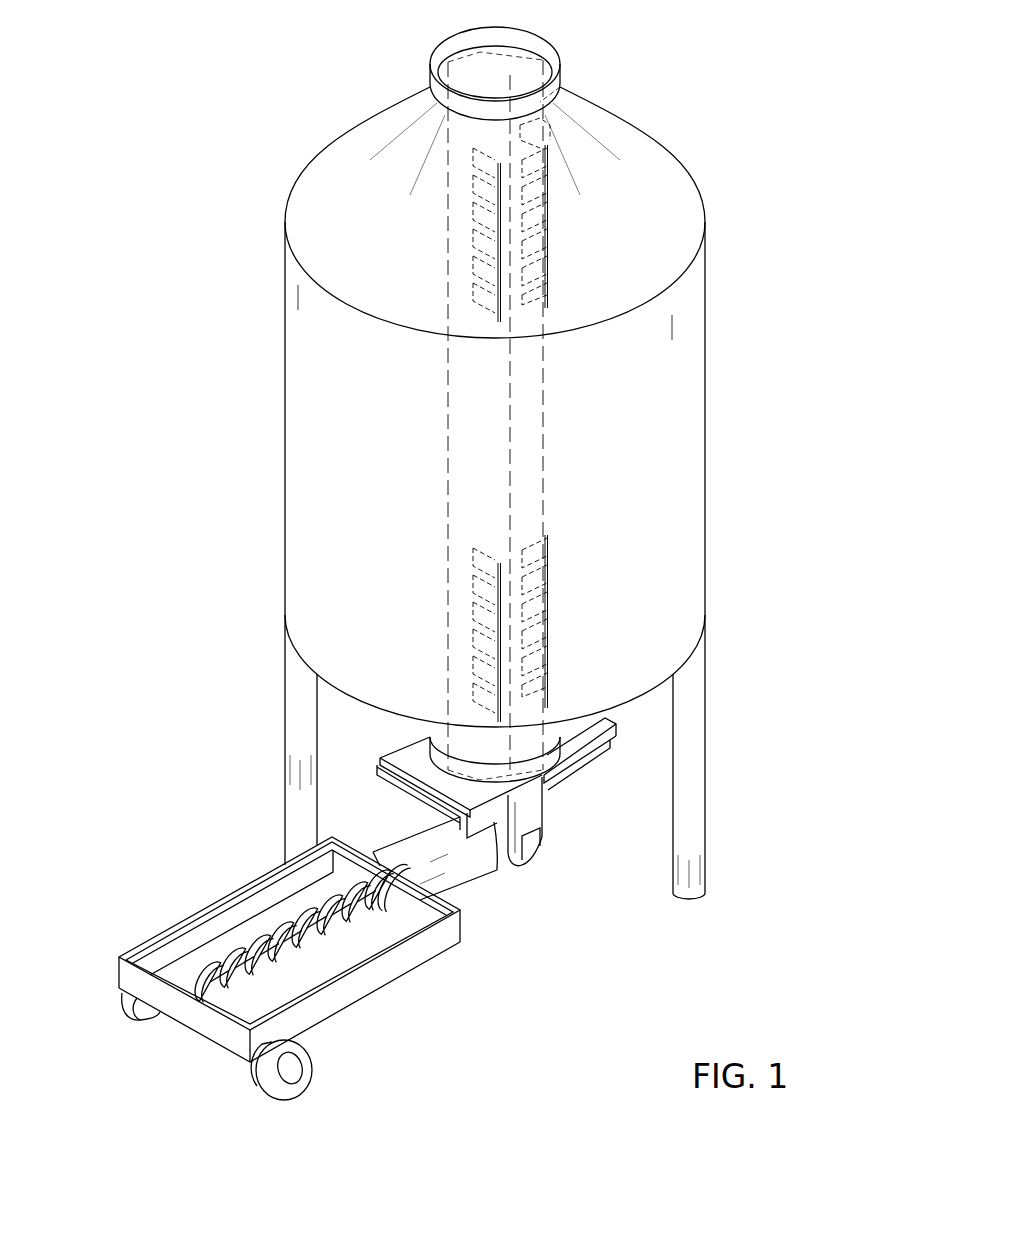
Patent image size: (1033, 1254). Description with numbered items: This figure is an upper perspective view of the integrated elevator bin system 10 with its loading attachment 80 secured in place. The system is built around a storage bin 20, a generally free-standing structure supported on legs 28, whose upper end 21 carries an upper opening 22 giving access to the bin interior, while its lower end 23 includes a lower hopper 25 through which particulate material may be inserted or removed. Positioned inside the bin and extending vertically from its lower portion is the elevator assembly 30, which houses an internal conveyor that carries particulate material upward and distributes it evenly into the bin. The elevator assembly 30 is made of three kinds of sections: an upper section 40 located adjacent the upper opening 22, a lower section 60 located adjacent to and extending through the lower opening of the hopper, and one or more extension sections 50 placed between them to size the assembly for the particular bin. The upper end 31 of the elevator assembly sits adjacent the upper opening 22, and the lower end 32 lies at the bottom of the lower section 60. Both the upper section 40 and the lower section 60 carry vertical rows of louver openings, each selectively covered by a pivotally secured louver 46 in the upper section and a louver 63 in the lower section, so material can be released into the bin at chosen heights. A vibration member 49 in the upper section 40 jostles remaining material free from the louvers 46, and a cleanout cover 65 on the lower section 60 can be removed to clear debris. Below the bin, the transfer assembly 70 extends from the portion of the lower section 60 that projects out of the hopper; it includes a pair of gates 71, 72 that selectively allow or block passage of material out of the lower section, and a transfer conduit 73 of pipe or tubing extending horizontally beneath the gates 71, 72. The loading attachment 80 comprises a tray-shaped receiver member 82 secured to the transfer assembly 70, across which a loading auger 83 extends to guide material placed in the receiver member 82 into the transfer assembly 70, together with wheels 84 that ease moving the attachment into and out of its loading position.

The integrated elevator bin system 10 is at (705, 104).
The storage bin 20 is at (283, 392).
The upper end 21 is at (430, 72).
The upper opening 22 is at (545, 38).
The upper end 31 is at (478, 52).
The vibration member 49 is at (568, 93).
The upper section 40 is at (432, 187).
The louver 46 is at (735, 215).
The elevator assembly 30 is at (432, 485).
The extension section 50 is at (561, 428).
The lower section 60 is at (432, 550).
The louver 63 is at (720, 575).
The legs 28 is at (302, 685).
The lower hopper 25 is at (557, 732).
The lower end 23 is at (548, 778).
The lower end 32 is at (498, 873).
The cleanout cover 65 is at (534, 848).
The transfer assembly 70 is at (466, 893).
The gate 71 is at (372, 788).
The gate 72 is at (614, 720).
The transfer conduit 73 is at (395, 847).
The loading attachment 80 is at (170, 917).
The receiver member 82 is at (250, 900).
The auger 83 is at (310, 967).
The wheels 84 is at (315, 1060).